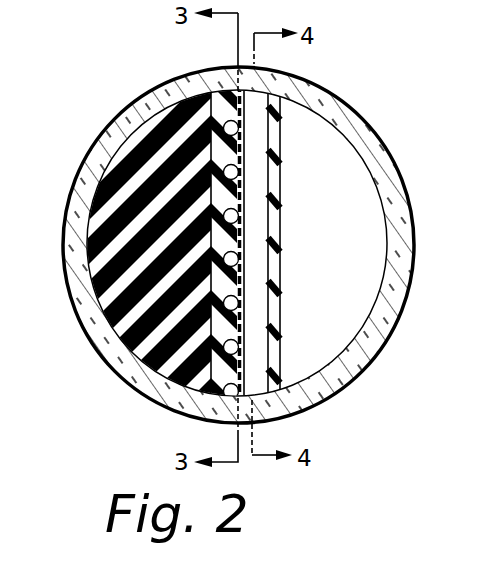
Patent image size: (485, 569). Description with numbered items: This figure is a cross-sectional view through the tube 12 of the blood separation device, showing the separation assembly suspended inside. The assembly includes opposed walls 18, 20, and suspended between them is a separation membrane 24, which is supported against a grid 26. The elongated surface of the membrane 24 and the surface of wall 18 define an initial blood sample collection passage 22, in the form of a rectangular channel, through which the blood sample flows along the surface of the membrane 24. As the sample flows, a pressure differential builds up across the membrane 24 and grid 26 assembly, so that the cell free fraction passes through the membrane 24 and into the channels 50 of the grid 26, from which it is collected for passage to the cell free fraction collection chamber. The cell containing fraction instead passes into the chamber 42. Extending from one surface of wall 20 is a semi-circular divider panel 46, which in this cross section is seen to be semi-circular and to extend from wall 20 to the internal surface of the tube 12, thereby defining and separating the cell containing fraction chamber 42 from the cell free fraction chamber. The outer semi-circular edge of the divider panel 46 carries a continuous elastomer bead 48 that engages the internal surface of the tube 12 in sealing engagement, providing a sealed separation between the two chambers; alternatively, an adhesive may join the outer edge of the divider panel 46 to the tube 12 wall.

The tube 12 is at (411, 292).
The chamber 42 is at (345, 340).
The divider panel 46 is at (122, 233).
The elastomer bead 48 is at (122, 160).
The grid 26 is at (218, 116).
The wall 20 is at (212, 362).
The channels 50 is at (240, 295).
The separation membrane 24 is at (243, 226).
The blood sample collection passage 22 is at (257, 237).
The wall 18 is at (275, 167).